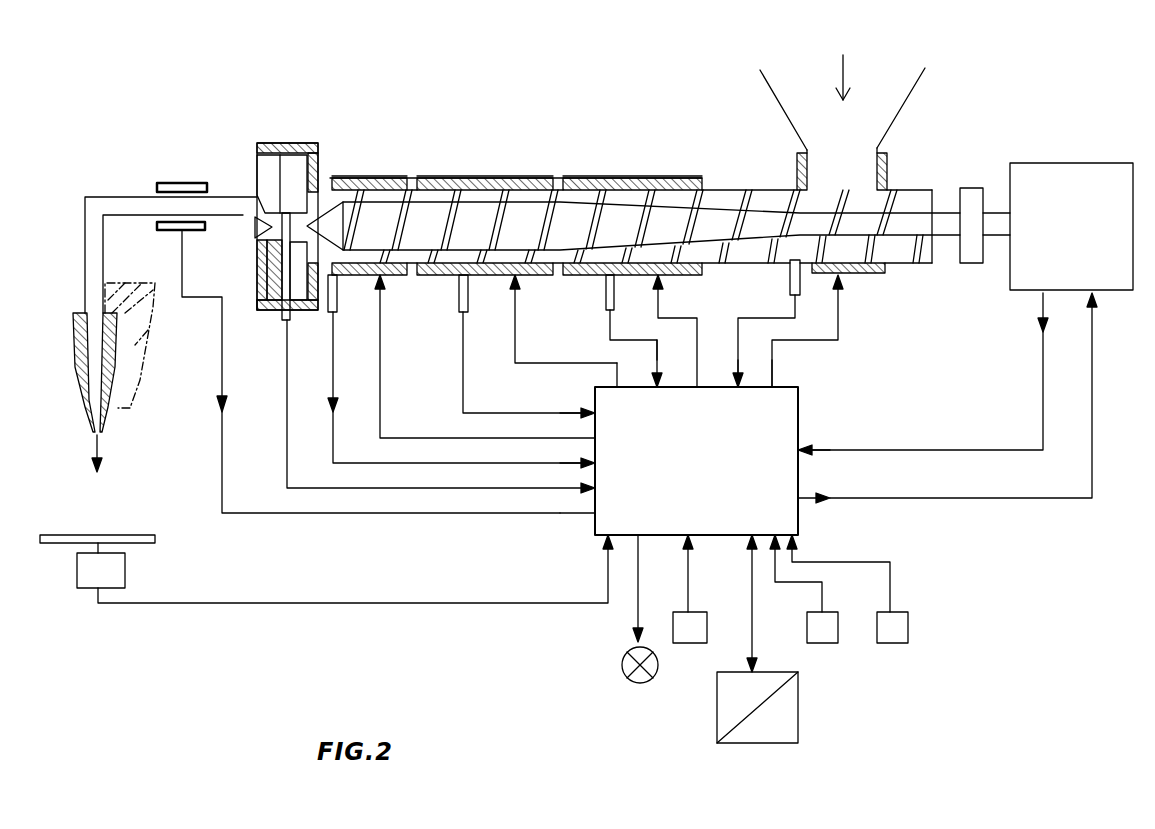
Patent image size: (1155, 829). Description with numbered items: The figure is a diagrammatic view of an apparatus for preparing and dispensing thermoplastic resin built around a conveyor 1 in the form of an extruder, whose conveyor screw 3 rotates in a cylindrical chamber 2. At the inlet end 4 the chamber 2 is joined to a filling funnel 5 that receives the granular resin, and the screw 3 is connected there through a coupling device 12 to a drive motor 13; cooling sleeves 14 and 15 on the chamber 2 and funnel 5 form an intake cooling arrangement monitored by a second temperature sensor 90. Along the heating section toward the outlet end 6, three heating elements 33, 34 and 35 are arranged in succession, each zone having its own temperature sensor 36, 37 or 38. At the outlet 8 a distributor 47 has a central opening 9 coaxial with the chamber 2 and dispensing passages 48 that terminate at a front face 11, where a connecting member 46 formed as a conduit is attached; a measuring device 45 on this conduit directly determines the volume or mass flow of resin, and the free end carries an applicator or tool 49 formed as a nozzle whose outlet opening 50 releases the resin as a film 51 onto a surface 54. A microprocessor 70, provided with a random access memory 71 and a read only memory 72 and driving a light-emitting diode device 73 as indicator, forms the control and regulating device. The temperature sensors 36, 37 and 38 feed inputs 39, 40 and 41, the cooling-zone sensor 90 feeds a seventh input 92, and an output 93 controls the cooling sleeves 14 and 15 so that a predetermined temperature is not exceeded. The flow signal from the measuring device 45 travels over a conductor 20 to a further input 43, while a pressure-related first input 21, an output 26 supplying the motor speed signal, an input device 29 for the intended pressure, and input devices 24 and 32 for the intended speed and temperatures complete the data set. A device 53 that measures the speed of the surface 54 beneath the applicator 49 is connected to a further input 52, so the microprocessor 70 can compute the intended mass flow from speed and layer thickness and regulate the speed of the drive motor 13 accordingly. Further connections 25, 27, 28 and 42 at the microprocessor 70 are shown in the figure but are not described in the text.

The conveyor 1 is at (588, 146).
The cylindrical chamber 2 is at (716, 188).
The conveyor screw 3 is at (765, 211).
The inlet end 4 is at (855, 290).
The filling funnel 5 is at (900, 112).
The outlet end 6 is at (355, 158).
The outlet 8 is at (250, 160).
The central opening 9 is at (288, 242).
The front face 11 is at (260, 304).
The coupling device 12 is at (972, 268).
The drive motor 13 is at (1050, 172).
The cooling sleeve 14 is at (880, 276).
The cooling sleeve 15 is at (887, 171).
The conductor 20 is at (224, 440).
The first input 21 is at (459, 413).
The input device 24 is at (828, 648).
The signal line 25 is at (808, 445).
The output 26 is at (1036, 306).
The signal line 27 is at (802, 512).
The signal line 28 is at (1097, 306).
The input device 29 is at (690, 648).
The input device 32 is at (894, 648).
The heating element 33 is at (384, 178).
The heating element 34 is at (463, 178).
The heating element 35 is at (637, 178).
The temperature sensor 36 is at (338, 312).
The temperature sensor 37 is at (468, 305).
The temperature sensor 38 is at (613, 300).
The input 39 is at (596, 467).
The input 40 is at (596, 416).
The input 41 is at (658, 380).
The output 42 is at (503, 365).
The further input 43 is at (596, 517).
The measuring device 45 is at (181, 183).
The connecting member 46 is at (98, 197).
The distributor 47 is at (290, 153).
The dispensing passage 48 is at (252, 226).
The applicator or tool 49 is at (73, 330).
The outlet opening 50 is at (92, 420).
The film 51 is at (126, 408).
The further input 52 is at (595, 546).
The speed determining device 53 is at (125, 571).
The surface 54 is at (110, 535).
The microprocessor 70 is at (722, 466).
The random access memory 71 is at (717, 710).
The read only memory 72 is at (800, 740).
The light-emitting diode device 73 is at (636, 687).
The second temperature sensor 90 is at (790, 284).
The seventh input 92 is at (738, 390).
The output 93 is at (778, 390).